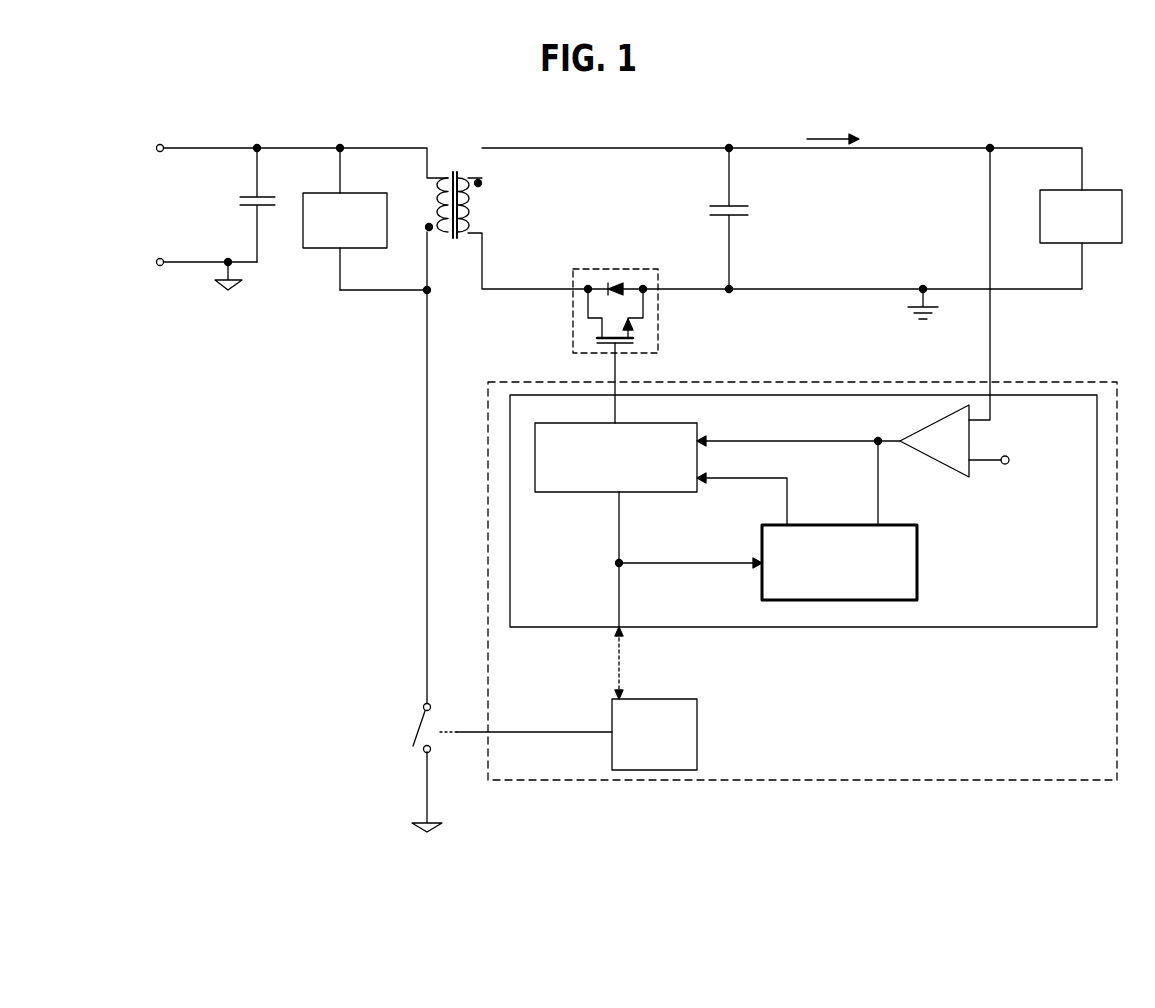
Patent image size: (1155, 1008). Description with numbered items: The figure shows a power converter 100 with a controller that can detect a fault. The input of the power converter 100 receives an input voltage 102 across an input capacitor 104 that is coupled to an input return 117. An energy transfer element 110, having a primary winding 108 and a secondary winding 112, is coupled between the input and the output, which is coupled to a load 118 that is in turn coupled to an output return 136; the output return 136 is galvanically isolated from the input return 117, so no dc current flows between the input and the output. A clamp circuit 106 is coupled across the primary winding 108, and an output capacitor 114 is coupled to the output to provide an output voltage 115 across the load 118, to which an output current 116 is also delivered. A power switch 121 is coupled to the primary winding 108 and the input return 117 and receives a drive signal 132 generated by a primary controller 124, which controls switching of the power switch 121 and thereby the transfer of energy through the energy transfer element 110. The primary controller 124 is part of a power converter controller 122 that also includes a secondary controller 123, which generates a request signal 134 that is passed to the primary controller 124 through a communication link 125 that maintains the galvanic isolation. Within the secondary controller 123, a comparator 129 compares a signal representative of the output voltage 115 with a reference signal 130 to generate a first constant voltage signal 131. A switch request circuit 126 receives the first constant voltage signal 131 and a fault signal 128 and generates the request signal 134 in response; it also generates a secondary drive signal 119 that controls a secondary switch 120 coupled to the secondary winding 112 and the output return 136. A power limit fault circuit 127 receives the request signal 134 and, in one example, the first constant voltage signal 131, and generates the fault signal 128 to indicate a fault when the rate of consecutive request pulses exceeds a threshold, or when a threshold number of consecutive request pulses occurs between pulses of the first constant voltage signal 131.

The power converter 100 is at (1072, 86).
The input voltage 102 is at (168, 219).
The input capacitor 104 is at (265, 217).
The clamp circuit 106 is at (330, 252).
The primary winding 108 is at (426, 196).
The energy transfer element 110 is at (450, 170).
The secondary winding 112 is at (488, 197).
The output capacitor 114 is at (684, 212).
The output voltage 115 is at (782, 202).
The output current 116 is at (848, 123).
The input return 117 is at (224, 286).
The load 118 is at (1110, 180).
The secondary drive signal 119 is at (612, 367).
The secondary switch 120 is at (600, 262).
The power switch 121 is at (406, 735).
The power converter controller 122 is at (770, 373).
The secondary controller 123 is at (866, 629).
The primary controller 124 is at (700, 751).
The communication link 125 is at (630, 666).
The switch request circuit 126 is at (549, 494).
The power limit fault circuit 127 is at (920, 570).
The fault signal 128 is at (838, 500).
The comparator 129 is at (940, 470).
The reference signal 130 is at (1040, 479).
The first constant voltage signal 131 is at (795, 437).
The drive signal 132 is at (458, 700).
The request signal 134 is at (700, 556).
The output return 136 is at (908, 316).